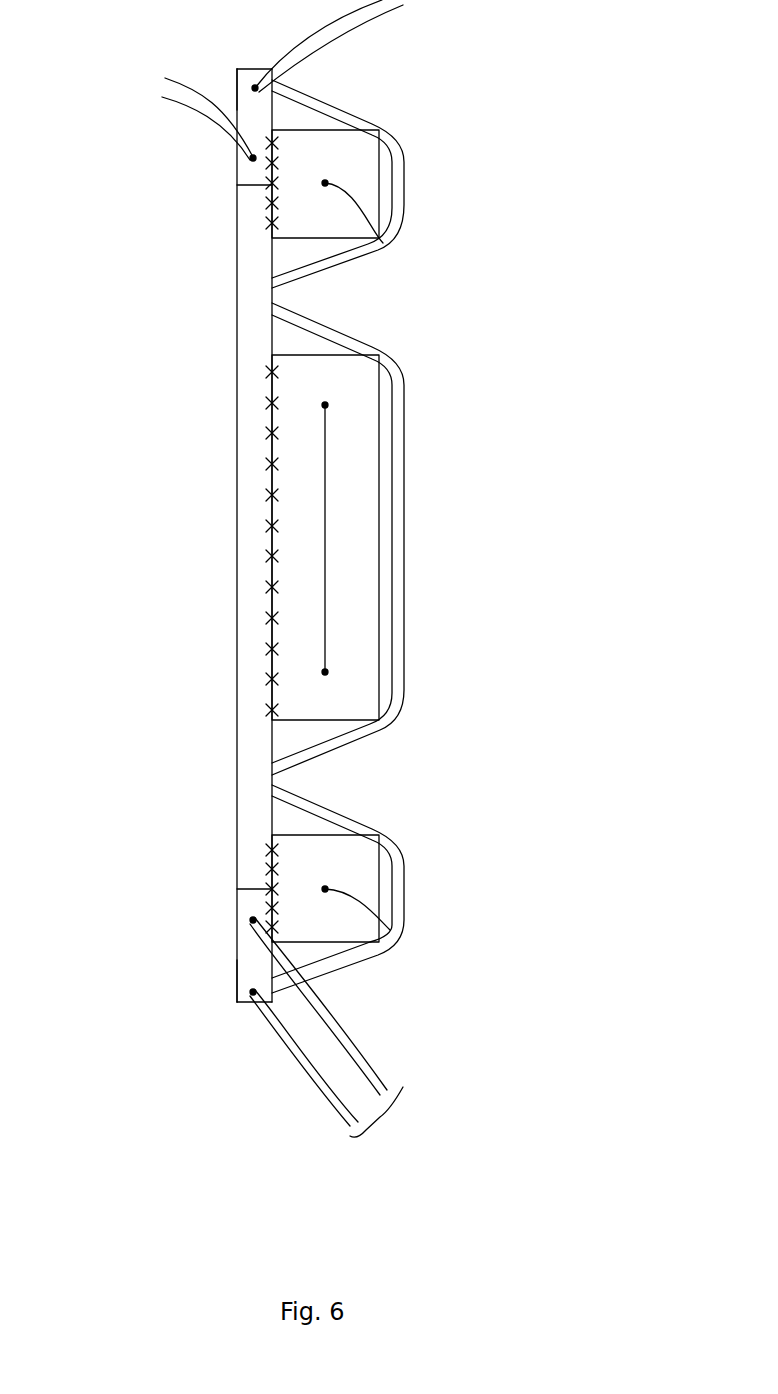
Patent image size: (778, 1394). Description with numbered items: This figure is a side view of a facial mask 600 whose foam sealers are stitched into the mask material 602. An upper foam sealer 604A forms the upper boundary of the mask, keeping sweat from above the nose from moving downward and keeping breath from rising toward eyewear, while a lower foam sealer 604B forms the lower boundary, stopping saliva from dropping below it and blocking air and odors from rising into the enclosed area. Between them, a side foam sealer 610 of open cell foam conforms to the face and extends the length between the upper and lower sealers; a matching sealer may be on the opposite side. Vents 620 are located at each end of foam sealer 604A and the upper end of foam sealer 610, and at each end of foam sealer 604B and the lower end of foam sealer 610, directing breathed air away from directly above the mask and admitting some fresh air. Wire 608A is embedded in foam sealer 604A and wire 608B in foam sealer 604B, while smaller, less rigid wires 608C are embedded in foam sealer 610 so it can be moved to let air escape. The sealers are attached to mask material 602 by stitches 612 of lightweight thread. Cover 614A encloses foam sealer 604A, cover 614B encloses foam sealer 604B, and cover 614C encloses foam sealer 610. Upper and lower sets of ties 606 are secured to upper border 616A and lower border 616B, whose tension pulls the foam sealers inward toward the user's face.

The facial mask 600 is at (170, 1083).
The mask material 602 is at (250, 445).
The foam sealer 604A is at (362, 159).
The foam sealer 604B is at (388, 887).
The ties 606 is at (370, 25).
The wire 608A is at (383, 243).
The wire 608B is at (390, 930).
The wires 608C is at (325, 625).
The foam sealers 610 is at (362, 540).
The stitches 612 is at (272, 203).
The cover 614A is at (405, 213).
The cover 614B is at (397, 835).
The covers 614C is at (404, 587).
The upper border 616A is at (237, 69).
The lower border 616B is at (237, 970).
The vents 620 is at (352, 303).